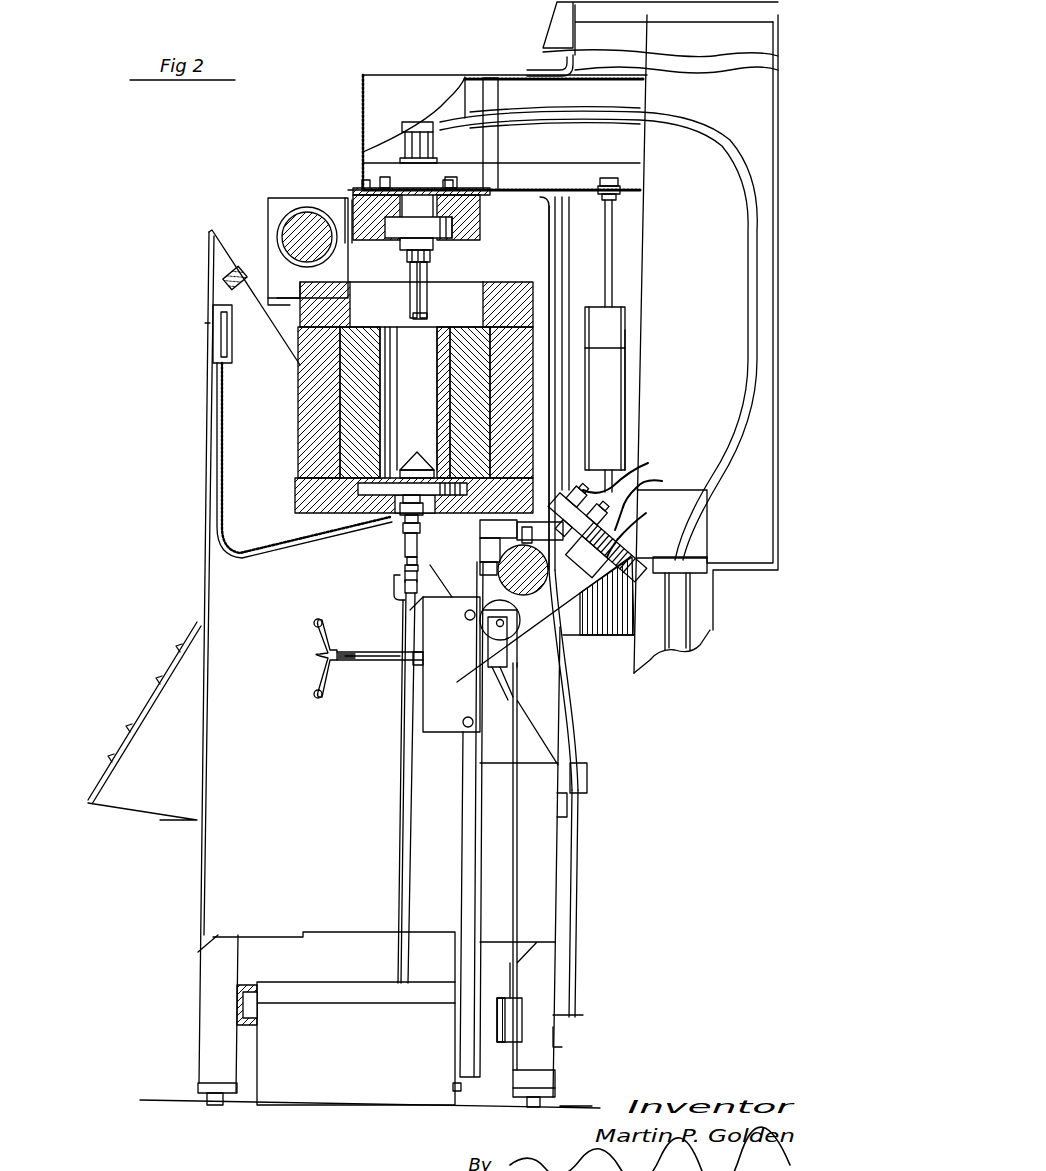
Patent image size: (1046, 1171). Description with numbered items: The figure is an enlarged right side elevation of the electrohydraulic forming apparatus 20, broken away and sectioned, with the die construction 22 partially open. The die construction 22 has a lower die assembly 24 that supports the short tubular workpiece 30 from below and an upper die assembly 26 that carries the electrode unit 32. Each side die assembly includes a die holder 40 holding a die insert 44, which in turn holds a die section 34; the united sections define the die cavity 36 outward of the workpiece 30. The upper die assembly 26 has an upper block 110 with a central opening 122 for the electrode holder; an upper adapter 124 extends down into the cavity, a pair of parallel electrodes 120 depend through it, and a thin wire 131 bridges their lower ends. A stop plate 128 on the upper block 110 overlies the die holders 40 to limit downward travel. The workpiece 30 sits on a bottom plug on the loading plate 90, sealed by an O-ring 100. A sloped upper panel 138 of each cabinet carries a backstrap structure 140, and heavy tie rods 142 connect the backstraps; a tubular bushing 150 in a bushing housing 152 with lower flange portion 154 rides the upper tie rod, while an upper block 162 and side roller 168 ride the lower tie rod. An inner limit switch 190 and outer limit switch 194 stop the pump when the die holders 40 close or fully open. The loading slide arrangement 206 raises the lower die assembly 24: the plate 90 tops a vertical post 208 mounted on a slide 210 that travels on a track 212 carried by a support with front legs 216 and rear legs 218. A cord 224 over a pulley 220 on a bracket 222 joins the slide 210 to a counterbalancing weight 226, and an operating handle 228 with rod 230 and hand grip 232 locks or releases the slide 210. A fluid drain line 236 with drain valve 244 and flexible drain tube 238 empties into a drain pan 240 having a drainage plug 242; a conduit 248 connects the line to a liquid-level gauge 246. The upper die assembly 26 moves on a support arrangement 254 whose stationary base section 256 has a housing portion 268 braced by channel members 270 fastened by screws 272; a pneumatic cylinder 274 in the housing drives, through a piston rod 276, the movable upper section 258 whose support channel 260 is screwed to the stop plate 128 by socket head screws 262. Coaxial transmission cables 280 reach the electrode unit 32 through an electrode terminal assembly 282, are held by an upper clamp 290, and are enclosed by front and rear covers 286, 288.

The apparatus 20 is at (372, 38).
The die construction 22 is at (265, 418).
The lower die assembly 24 is at (405, 503).
The upper die assembly 26 is at (490, 232).
The tubular workpiece 30 is at (403, 390).
The electrode unit 32 is at (398, 256).
The die section 34 is at (360, 345).
The die cavity 36 is at (445, 376).
The die holder 40 is at (297, 444).
The die insert 44 is at (365, 376).
The loading plate 90 is at (380, 505).
The O-ring 100 is at (430, 252).
The upper block 110 is at (465, 236).
The electrodes 120 is at (428, 292).
The central opening 122 is at (485, 292).
The upper adapter 124 is at (398, 243).
The stop plate 128 is at (480, 212).
The thin wire 131 is at (427, 313).
The upper panel 138 is at (226, 262).
The backstrap structure 140 is at (320, 196).
The tie rods 142 is at (305, 200).
The tubular bushing 150 is at (285, 222).
The bushing housing 152 is at (346, 198).
The lower flange portion 154 is at (290, 312).
The upper block 162 is at (486, 525).
The side roller 168 is at (480, 569).
The inner limit switch 190 is at (565, 488).
The outer limit switch 194 is at (596, 570).
The loading slide arrangement 206 is at (396, 690).
The vertical post 208 is at (417, 546).
The slide 210 is at (437, 667).
The track 212 is at (465, 775).
The front legs 216 is at (205, 1005).
The rear legs 218 is at (555, 1058).
The pulley 220 is at (512, 617).
The bracket 222 is at (508, 657).
The cord 224 is at (515, 828).
The weight 226 is at (522, 1005).
The operating handle 228 is at (350, 663).
The rod 230 is at (387, 650).
The hand grip 232 is at (318, 652).
The fluid drain line 236 is at (405, 540).
The drain tube 238 is at (400, 777).
The drain pan 240 is at (380, 1045).
The drainage plug 242 is at (462, 1090).
The drain valve 244 is at (399, 596).
The liquid-level gauge 246 is at (213, 345).
The conduit 248 is at (226, 501).
The support arrangement 254 is at (543, 40).
The base section 256 is at (650, 285).
The upper section 258 is at (500, 72).
The support channel 260 is at (518, 185).
The socket head screws 262 is at (385, 177).
The housing portion 268 is at (636, 378).
The channel members 270 is at (656, 499).
The screws 272 is at (632, 504).
The pneumatic cylinder 274 is at (587, 389).
The piston rod 276 is at (612, 236).
The coaxial transmission cables 280 is at (740, 150).
The electrode terminal assembly 282 is at (437, 146).
The front cover 286 is at (521, 76).
The rear cover 288 is at (782, 178).
The upper clamp 290 is at (498, 100).